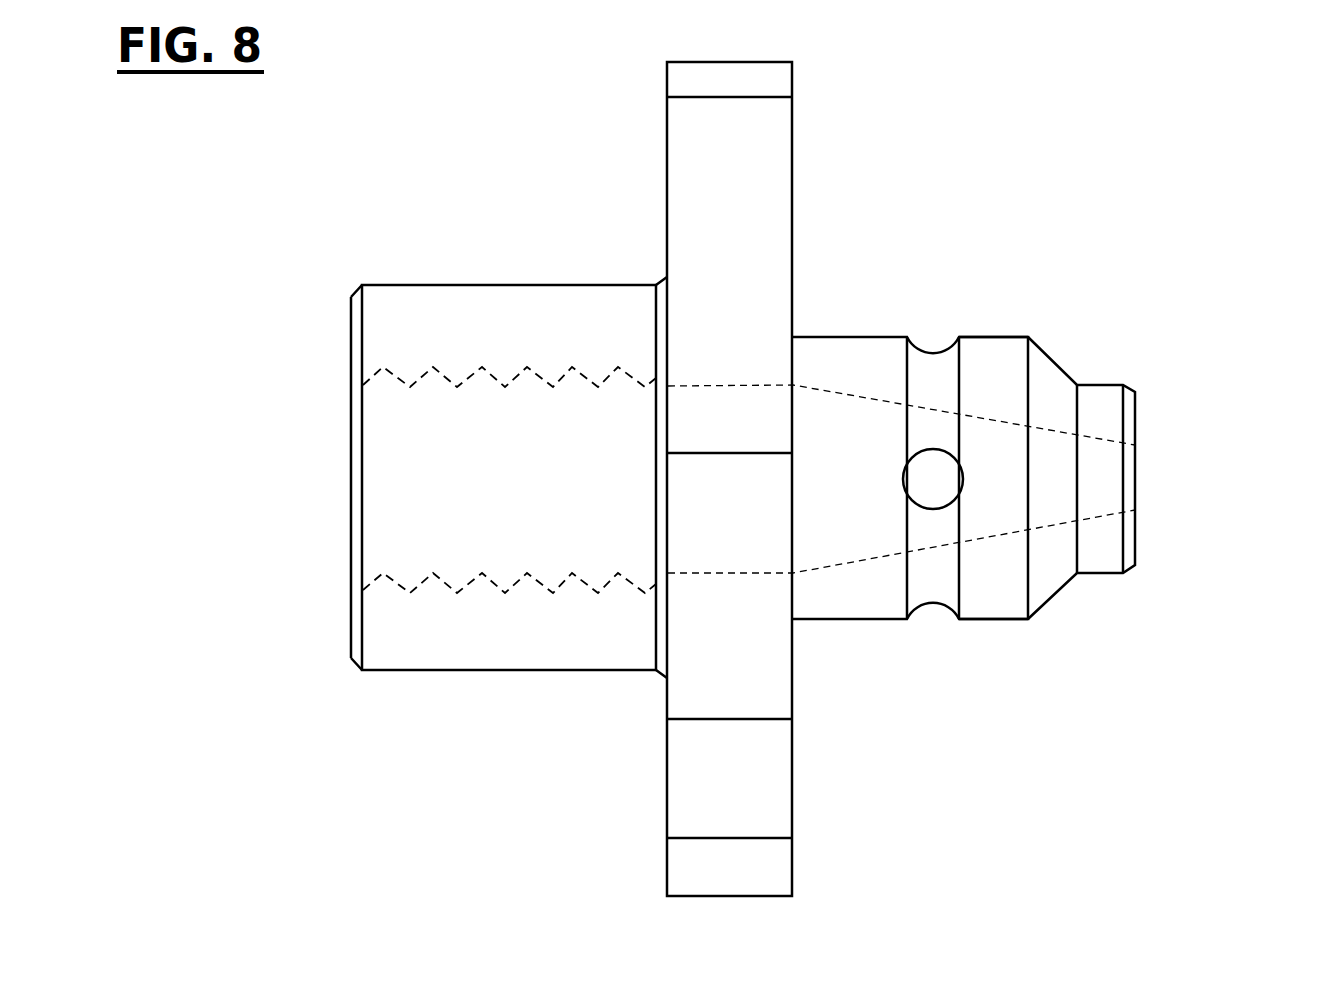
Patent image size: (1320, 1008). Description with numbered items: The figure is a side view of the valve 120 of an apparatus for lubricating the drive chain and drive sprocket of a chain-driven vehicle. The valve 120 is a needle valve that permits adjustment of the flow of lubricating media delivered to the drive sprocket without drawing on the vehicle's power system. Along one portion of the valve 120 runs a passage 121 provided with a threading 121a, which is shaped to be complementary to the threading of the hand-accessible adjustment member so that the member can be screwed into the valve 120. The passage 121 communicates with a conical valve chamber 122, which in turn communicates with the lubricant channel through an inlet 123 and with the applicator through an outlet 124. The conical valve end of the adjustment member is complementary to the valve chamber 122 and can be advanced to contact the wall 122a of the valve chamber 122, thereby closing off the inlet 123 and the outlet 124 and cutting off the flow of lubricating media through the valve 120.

The valve 120 is at (405, 197).
The passage 121 is at (402, 487).
The threading 121a is at (502, 586).
The valve chamber 122 is at (850, 535).
The wall 122a is at (979, 540).
The inlet 123 is at (937, 467).
The outlet 124 is at (1137, 479).